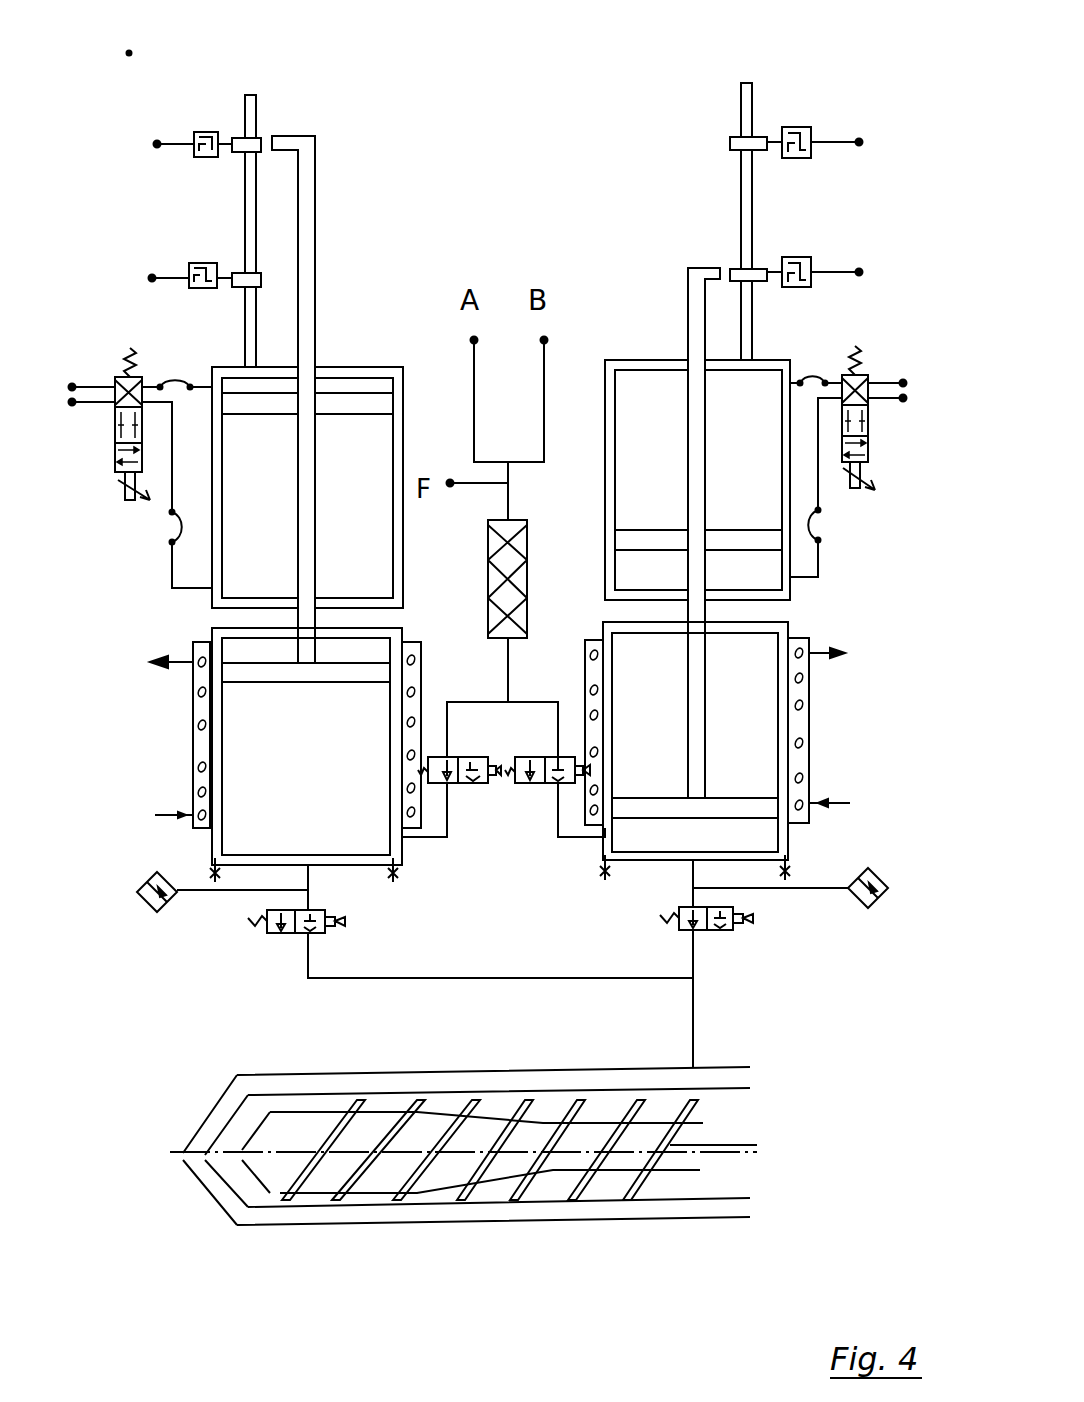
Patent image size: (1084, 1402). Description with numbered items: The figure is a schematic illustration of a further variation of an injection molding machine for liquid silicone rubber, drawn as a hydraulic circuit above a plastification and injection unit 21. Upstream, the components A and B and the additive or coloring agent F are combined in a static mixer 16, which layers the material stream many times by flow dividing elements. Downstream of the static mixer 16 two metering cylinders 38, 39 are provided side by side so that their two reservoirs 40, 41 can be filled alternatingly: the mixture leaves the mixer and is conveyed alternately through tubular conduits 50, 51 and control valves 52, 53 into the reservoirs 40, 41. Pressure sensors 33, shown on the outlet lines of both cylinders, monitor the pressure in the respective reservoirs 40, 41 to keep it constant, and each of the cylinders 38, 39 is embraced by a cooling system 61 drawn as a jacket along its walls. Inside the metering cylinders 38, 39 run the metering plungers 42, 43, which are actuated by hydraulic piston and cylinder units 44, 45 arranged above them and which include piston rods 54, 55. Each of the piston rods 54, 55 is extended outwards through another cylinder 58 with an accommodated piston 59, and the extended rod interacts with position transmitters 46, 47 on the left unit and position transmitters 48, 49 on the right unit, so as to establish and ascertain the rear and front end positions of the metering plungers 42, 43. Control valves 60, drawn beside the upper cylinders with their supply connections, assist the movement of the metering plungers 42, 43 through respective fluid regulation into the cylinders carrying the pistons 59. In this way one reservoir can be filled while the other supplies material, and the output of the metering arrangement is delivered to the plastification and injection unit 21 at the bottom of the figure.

The static mixer 16 is at (528, 578).
The plastification and injection unit 21 is at (497, 1220).
The pressure sensor 33 is at (143, 912).
The metering cylinder 38 is at (181, 721).
The metering cylinder 39 is at (828, 694).
The reservoir 40 is at (350, 828).
The reservoir 41 is at (748, 840).
The metering plunger 42 is at (350, 640).
The metering plunger 43 is at (745, 797).
The hydraulic piston and cylinder unit 44 is at (345, 358).
The hydraulic piston and cylinder unit 45 is at (667, 357).
The position transmitter 46 is at (206, 130).
The position transmitter 47 is at (206, 262).
The position transmitter 48 is at (797, 127).
The position transmitter 49 is at (800, 258).
The tubular conduit 50 is at (471, 700).
The tubular conduit 51 is at (525, 700).
The control valve 52 is at (467, 785).
The control valve 53 is at (540, 785).
The piston rod 54 is at (305, 172).
The piston rod 55 is at (698, 283).
The cylinder 58 is at (401, 461).
The piston 59 is at (382, 405).
The control valve 60 is at (113, 452).
The cooling system 61 is at (198, 752).